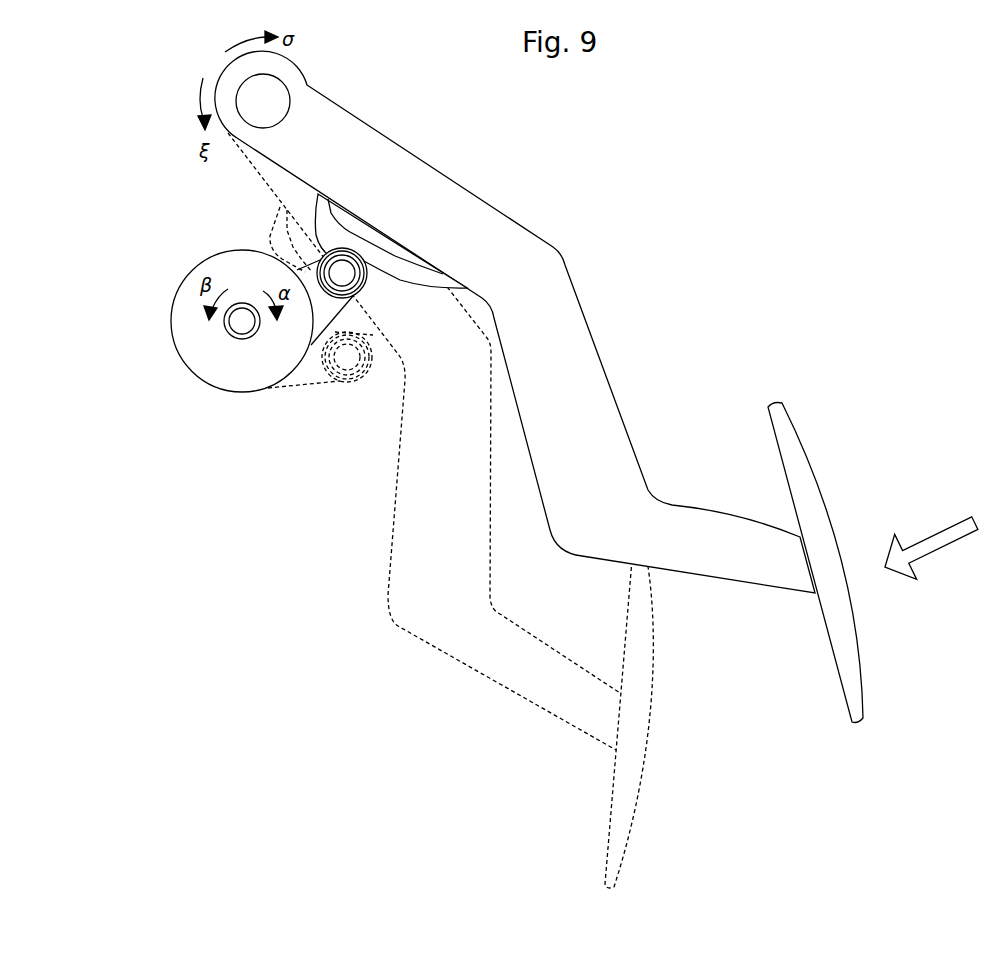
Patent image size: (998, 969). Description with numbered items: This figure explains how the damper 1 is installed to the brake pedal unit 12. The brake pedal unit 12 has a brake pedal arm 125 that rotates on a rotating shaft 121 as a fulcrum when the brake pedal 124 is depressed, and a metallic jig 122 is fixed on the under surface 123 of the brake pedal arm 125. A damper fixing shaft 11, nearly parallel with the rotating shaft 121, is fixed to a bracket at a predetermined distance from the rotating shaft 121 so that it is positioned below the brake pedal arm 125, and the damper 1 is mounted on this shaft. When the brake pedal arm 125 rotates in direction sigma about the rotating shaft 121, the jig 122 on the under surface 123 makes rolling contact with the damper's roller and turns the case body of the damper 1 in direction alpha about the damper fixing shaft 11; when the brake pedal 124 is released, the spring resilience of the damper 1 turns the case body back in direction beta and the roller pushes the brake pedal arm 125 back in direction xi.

The damper 1 is at (206, 261).
The damper fixing shaft 11 is at (224, 326).
The brake pedal unit 12 is at (757, 281).
The rotating shaft 121 is at (288, 92).
The jig 122 is at (417, 288).
The under surface 123 is at (305, 183).
The brake pedal 124 is at (808, 458).
The brake pedal arm 125 is at (420, 163).